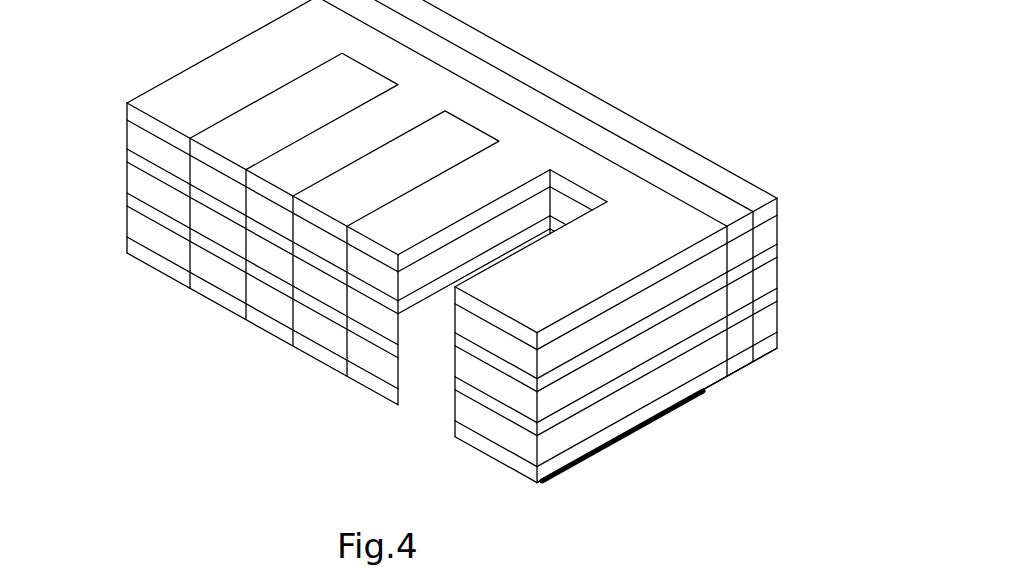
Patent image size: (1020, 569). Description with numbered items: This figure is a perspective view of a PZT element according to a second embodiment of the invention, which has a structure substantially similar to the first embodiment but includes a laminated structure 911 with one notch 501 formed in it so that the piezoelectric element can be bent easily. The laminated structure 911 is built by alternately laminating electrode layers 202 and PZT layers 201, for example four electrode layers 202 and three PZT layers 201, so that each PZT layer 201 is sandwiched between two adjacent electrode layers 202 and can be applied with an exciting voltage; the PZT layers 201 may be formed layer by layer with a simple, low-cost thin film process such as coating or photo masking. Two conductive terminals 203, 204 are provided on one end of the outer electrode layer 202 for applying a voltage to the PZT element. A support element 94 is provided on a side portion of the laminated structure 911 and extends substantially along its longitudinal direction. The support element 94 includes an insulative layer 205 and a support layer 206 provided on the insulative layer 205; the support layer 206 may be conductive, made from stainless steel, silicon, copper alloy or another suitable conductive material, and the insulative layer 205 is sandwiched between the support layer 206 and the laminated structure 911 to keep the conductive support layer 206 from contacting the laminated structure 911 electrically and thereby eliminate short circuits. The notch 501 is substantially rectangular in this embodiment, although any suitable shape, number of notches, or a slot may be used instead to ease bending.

The laminated structure 911 is at (474, 246).
The PZT layer 201 is at (305, 323).
The electrode layer 202 is at (357, 372).
The conductive terminal 203 is at (590, 457).
The conductive terminal 204 is at (697, 397).
The insulative layer 205 is at (647, 172).
The support layer 206 is at (553, 73).
The support element 94 is at (614, 188).
The notch 501 is at (428, 417).